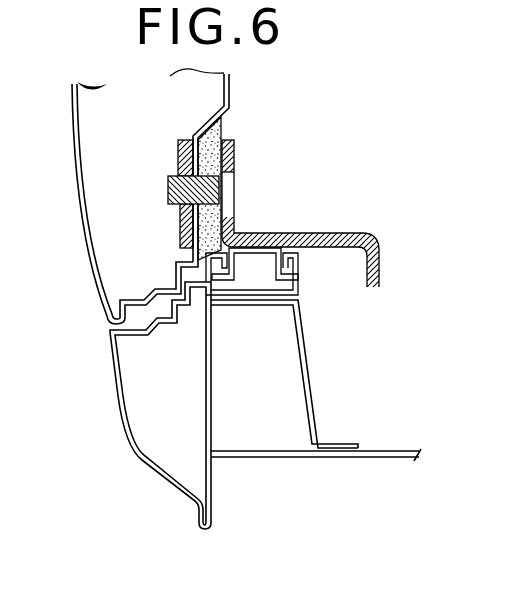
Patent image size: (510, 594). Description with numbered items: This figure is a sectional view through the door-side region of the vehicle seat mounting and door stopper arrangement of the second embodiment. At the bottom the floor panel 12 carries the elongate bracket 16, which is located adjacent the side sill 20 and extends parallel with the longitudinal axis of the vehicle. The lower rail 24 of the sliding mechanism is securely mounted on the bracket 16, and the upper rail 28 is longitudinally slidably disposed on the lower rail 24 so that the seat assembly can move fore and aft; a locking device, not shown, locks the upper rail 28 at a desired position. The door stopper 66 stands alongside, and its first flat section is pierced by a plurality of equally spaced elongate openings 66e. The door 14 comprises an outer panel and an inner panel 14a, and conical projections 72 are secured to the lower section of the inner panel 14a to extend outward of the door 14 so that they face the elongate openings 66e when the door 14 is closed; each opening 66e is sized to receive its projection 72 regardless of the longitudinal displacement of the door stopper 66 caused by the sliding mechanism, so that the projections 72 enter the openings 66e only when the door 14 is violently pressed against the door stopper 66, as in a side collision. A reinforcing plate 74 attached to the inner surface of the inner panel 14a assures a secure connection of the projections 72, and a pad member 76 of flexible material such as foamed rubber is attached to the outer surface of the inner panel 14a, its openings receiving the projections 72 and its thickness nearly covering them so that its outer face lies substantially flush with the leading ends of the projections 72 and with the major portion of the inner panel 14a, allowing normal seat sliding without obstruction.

The floor panel 12 is at (378, 448).
The door 14 is at (78, 205).
The inner panel 14a is at (229, 87).
The bracket 16 is at (308, 359).
The side sill 20 is at (113, 398).
The lower rail 24 is at (300, 282).
The upper rail 28 is at (254, 256).
The door stopper 66 is at (338, 240).
The elongate openings 66e is at (234, 181).
The projections 72 is at (175, 190).
The reinforcing plate 74 is at (178, 150).
The pad member 76 is at (212, 131).